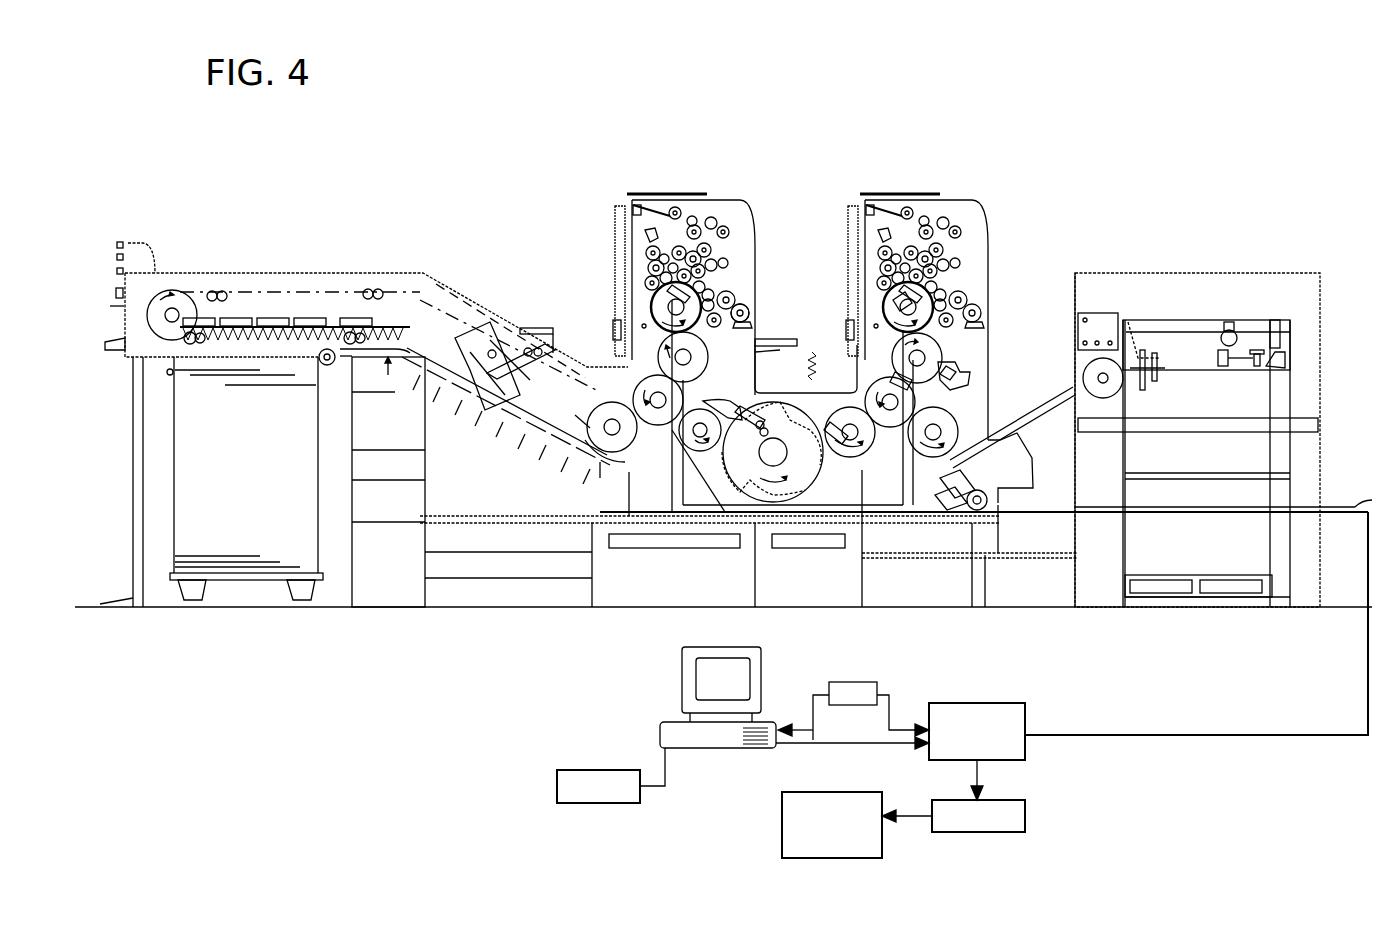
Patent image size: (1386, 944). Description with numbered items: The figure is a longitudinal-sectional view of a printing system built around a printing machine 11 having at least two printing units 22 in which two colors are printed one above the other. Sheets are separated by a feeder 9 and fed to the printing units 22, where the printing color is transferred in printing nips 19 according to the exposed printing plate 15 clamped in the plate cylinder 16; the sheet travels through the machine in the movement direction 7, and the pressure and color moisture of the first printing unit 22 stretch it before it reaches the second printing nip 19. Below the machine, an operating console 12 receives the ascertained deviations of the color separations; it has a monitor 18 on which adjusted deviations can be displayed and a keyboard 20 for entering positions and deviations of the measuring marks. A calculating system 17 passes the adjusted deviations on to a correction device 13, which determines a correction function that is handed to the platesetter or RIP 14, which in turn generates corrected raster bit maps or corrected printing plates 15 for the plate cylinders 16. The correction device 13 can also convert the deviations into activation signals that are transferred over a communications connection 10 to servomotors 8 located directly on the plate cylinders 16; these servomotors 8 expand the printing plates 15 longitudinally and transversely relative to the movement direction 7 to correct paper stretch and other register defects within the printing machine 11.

The movement direction 7 is at (745, 59).
The servomotors 8 is at (200, 478).
The feeder 9 is at (1310, 355).
The communications connection 10 is at (1345, 505).
The printing machine 11 is at (734, 400).
The operating console 12 is at (665, 695).
The correction device 13 is at (977, 705).
The RIP 14 is at (1010, 800).
The printing plates 15 is at (651, 301).
The plate cylinders 16 is at (750, 311).
The calculating system 17 is at (860, 690).
The monitor 18 is at (757, 663).
The printing nips 19 is at (655, 373).
The keyboard 20 is at (590, 780).
The printing units 22 is at (690, 187).